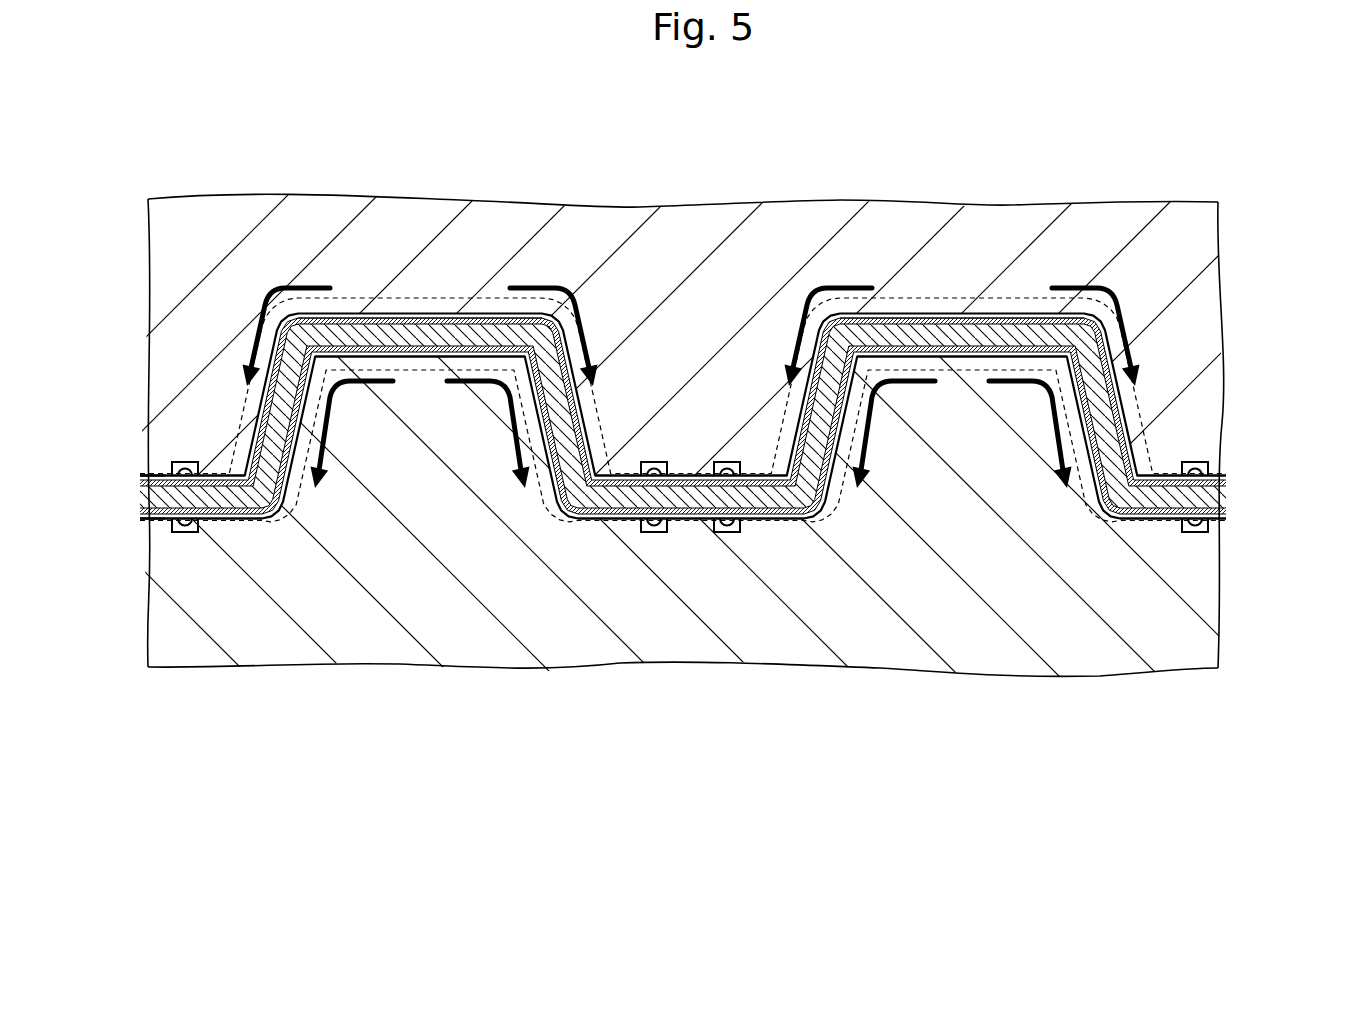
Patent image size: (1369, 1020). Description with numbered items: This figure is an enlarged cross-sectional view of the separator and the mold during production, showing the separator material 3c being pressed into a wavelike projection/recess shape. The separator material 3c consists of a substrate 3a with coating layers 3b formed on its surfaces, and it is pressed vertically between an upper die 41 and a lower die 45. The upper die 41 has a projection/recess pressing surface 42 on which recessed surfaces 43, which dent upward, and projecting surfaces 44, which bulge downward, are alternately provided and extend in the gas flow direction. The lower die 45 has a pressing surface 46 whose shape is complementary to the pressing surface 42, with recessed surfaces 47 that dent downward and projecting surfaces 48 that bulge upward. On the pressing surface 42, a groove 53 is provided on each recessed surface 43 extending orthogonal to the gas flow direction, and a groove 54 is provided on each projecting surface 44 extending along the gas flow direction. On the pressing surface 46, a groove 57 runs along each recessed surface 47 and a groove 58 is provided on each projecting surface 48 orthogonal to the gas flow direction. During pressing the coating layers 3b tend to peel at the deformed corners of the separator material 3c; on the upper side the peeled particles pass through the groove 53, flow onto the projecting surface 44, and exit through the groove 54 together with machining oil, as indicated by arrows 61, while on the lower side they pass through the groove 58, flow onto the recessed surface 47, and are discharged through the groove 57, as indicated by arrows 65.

The substrate 3a is at (1214, 497).
The coating layers 3b is at (1220, 484).
The separator material 3c is at (735, 430).
The upper die 41 is at (283, 248).
The pressing surface 42 is at (152, 481).
The recessed surface 43 is at (385, 322).
The projecting surface 44 is at (200, 474).
The lower die 45 is at (265, 625).
The pressing surface 46 is at (152, 515).
The recessed surface 47 is at (210, 520).
The projecting surface 48 is at (428, 360).
The groove 53 is at (447, 295).
The groove 54 is at (180, 462).
The groove 57 is at (184, 534).
The groove 58 is at (292, 522).
The arrows 61 is at (310, 286).
The arrows 65 is at (341, 447).